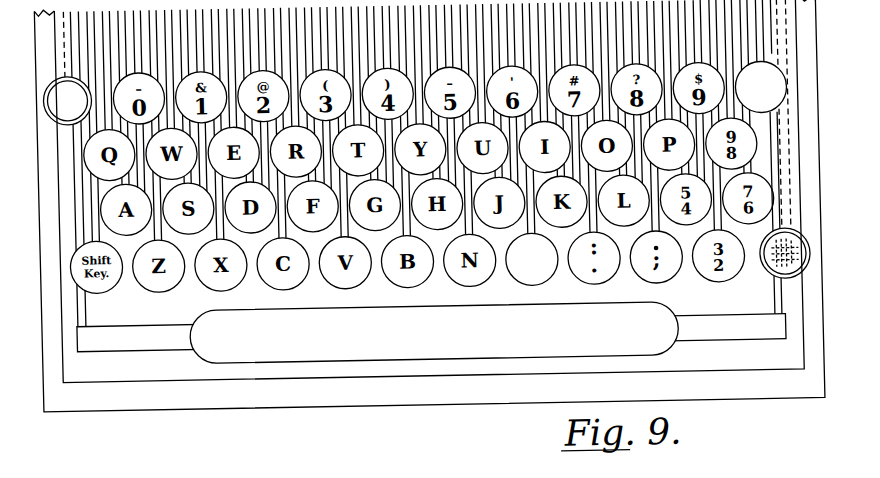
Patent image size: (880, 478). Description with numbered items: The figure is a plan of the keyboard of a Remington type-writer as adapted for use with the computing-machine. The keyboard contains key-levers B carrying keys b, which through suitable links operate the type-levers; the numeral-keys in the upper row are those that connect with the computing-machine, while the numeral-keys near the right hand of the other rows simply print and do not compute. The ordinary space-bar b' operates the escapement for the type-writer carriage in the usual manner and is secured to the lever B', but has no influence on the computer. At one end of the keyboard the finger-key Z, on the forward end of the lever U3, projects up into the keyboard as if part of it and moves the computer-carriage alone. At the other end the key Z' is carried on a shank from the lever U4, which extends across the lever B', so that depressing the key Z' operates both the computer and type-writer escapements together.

The lever U3 is at (76, 38).
The lever U4 is at (792, 73).
The finger-key Z is at (65, 118).
The key Z' is at (772, 212).
The key b is at (536, 268).
The space-bar b' is at (434, 333).
The key-lever B is at (696, 150).
The lever B' is at (432, 371).